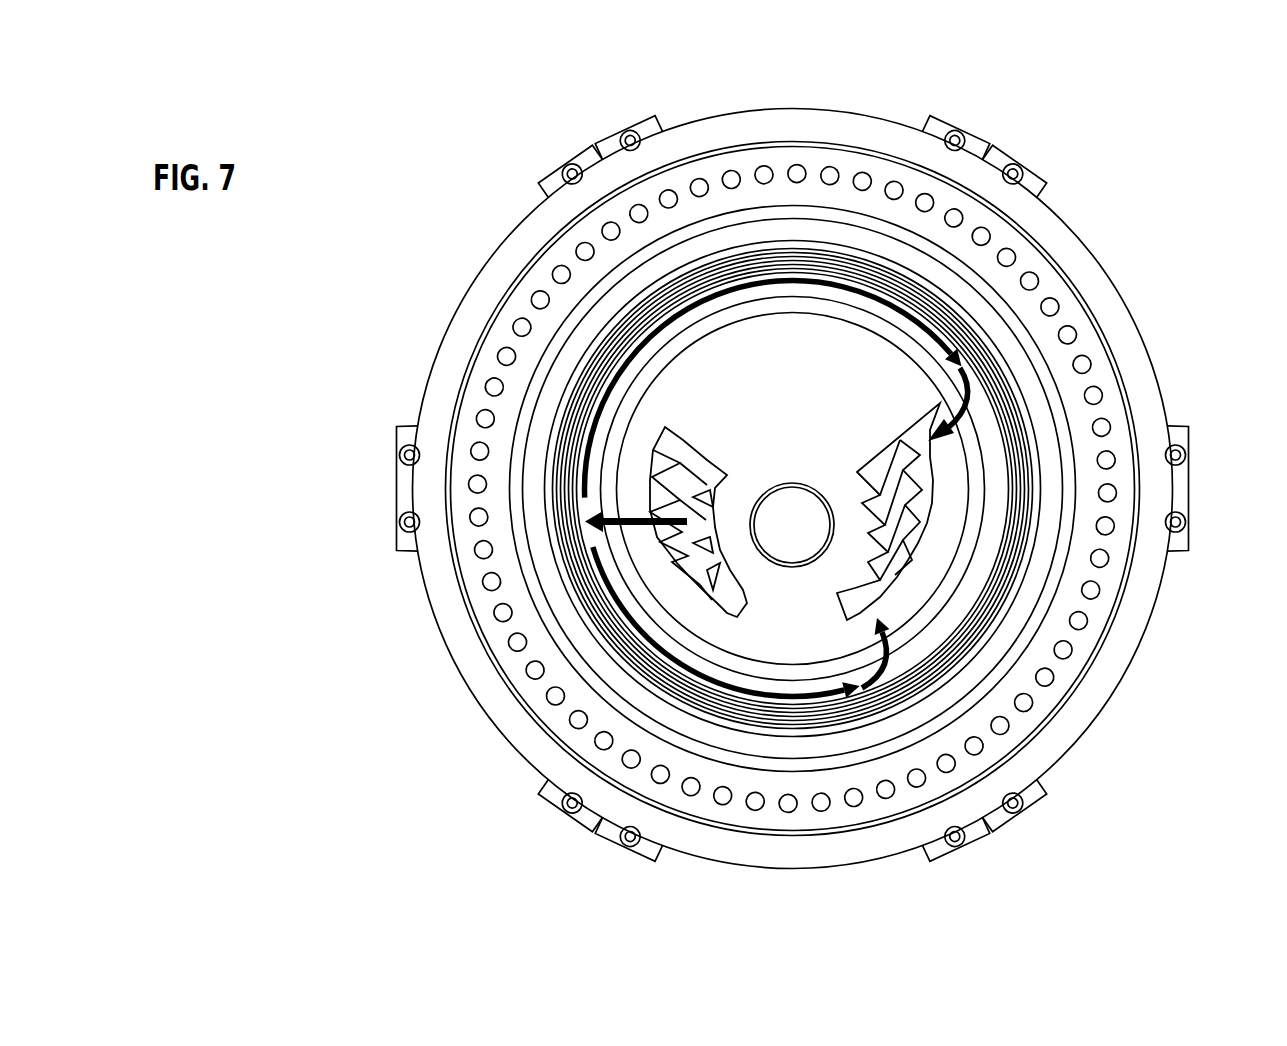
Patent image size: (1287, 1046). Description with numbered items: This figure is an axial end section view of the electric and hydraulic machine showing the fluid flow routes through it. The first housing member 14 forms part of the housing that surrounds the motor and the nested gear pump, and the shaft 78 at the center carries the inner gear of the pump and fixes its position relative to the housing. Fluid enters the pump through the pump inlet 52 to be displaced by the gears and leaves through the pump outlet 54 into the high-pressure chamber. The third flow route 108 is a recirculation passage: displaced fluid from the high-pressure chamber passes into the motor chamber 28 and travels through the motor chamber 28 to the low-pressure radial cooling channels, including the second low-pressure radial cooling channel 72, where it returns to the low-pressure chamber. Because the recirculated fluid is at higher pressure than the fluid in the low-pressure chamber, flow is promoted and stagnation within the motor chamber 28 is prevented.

The first housing member 14 is at (473, 283).
The motor chamber 28 is at (627, 632).
The pump inlet 52 is at (920, 543).
The pump outlet 54 is at (653, 460).
The second low-pressure radial cooling channel 72 is at (967, 520).
The shaft 78 is at (790, 518).
The third flow route 108 is at (603, 582).